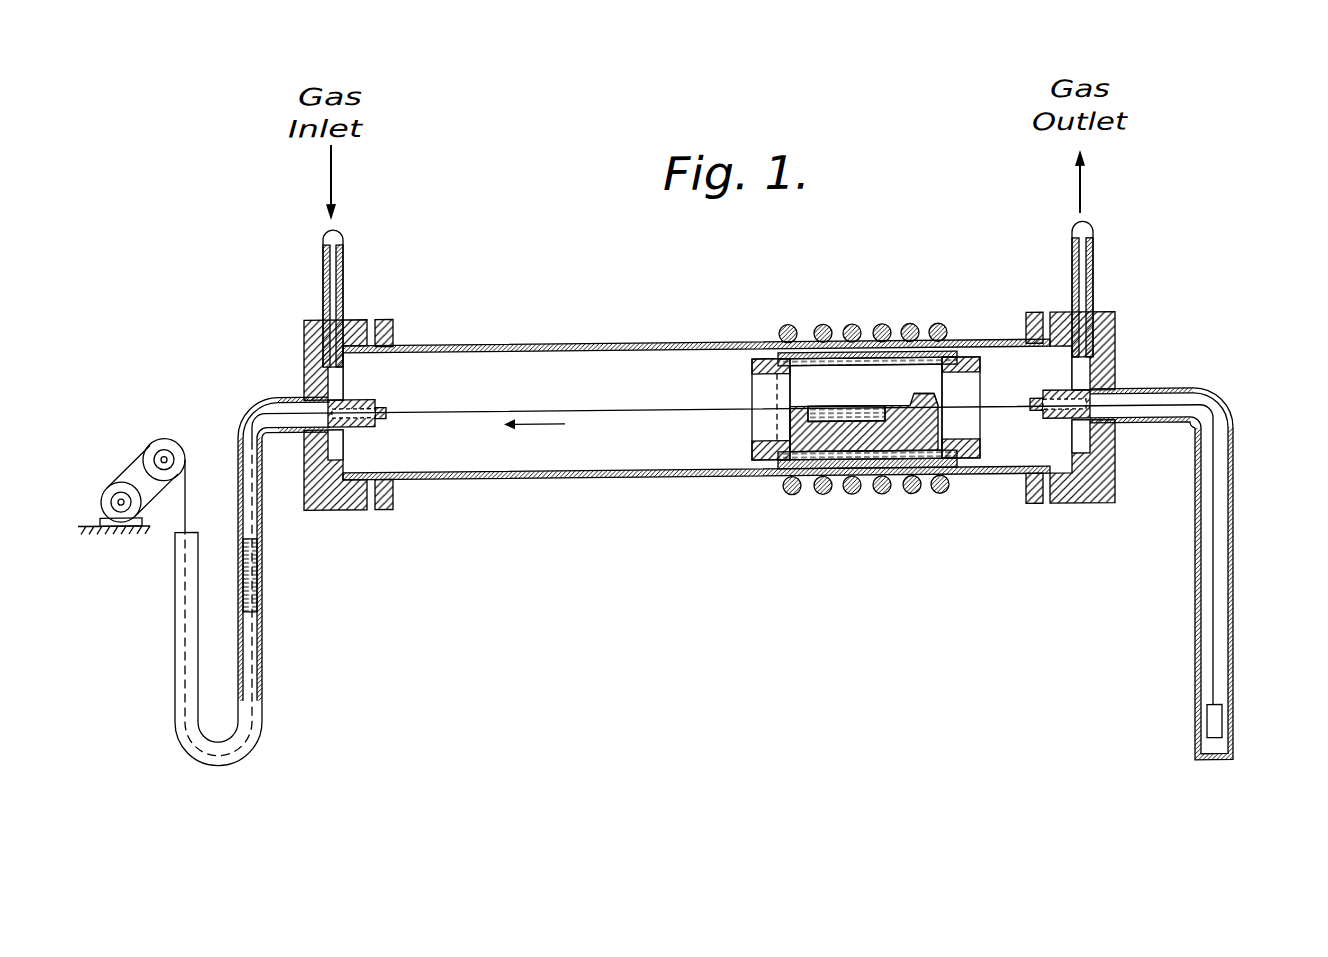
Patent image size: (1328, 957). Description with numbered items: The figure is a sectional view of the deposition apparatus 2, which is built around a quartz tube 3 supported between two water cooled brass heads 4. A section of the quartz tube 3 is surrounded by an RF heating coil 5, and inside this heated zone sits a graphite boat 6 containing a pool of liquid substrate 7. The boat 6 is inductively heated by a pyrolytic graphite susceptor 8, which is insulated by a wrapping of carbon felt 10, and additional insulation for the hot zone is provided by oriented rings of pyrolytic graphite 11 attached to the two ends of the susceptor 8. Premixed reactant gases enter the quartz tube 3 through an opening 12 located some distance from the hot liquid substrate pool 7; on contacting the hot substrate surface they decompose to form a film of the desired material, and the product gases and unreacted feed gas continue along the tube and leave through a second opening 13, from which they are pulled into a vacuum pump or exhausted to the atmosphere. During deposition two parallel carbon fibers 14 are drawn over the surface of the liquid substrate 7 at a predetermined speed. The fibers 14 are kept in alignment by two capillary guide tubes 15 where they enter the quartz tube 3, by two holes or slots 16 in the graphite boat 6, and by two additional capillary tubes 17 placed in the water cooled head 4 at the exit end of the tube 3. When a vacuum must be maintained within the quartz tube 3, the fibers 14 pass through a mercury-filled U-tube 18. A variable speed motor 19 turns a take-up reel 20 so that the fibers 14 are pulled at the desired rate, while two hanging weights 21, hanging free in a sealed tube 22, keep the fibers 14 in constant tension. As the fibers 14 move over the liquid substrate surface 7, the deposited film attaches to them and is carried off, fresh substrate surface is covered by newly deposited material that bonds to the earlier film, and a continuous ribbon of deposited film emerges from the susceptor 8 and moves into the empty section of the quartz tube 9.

The deposition apparatus 2 is at (679, 495).
The quartz tube 3 is at (487, 347).
The water cooled brass head 4 is at (310, 368).
The RF heating coil 5 is at (853, 330).
The graphite boat 6 is at (913, 422).
The liquid substrate 7 is at (830, 411).
The pyrolytic graphite susceptor 8 is at (893, 362).
The empty section of the quartz tube 9 is at (513, 400).
The carbon felt wrapping 10 is at (947, 357).
The oriented ring of pyrolytic graphite 11 is at (752, 372).
The opening 12 is at (335, 283).
The second opening 13 is at (1097, 293).
The carbon fiber 14 is at (662, 413).
The capillary guide tube 15 is at (1034, 426).
The hole or slot 16 is at (936, 412).
The capillary tube 17 is at (378, 409).
The mercury-filled U-tube 18 is at (258, 596).
The variable speed motor 19 is at (108, 492).
The take-up reel 20 is at (167, 437).
The hanging weight 21 is at (1218, 731).
The sealed tube 22 is at (1233, 599).